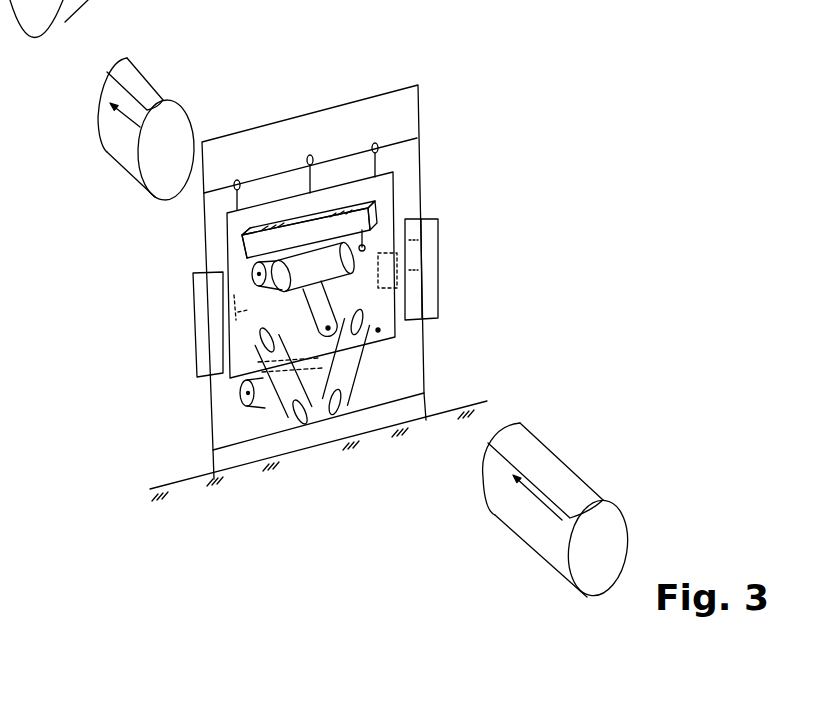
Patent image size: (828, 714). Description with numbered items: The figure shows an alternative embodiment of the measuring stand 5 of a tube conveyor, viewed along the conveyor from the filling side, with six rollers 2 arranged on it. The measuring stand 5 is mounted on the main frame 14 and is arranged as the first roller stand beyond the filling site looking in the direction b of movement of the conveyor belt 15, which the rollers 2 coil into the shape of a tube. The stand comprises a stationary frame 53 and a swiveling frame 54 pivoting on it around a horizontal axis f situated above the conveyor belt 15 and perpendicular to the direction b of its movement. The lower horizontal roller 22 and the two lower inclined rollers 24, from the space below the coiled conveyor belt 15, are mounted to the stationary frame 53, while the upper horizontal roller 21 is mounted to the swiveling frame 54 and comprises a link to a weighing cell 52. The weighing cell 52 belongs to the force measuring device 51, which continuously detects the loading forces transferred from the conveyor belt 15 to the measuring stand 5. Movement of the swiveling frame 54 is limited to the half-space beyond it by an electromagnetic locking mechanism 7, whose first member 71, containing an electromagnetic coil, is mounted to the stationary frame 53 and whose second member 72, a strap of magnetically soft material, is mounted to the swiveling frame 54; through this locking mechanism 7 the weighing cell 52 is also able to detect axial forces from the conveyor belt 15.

The rollers 2 is at (324, 395).
The measuring stand 5 is at (318, 110).
The locking mechanism 7 is at (451, 283).
The main frame 14 is at (198, 487).
The conveyor belt 15 is at (162, 79).
The upper horizontal roller 21 is at (330, 265).
The lower horizontal roller 22 is at (267, 395).
The lower inclined rollers 24 is at (347, 357).
The force measuring device 51 is at (230, 246).
The weighing cell 52 is at (332, 207).
The stationary frame 53 is at (210, 417).
The swiveling frame 54 is at (380, 328).
The first member 71 is at (430, 304).
The second member 72 is at (427, 252).
The horizontal axis f is at (400, 138).
The direction of movement b is at (333, 322).